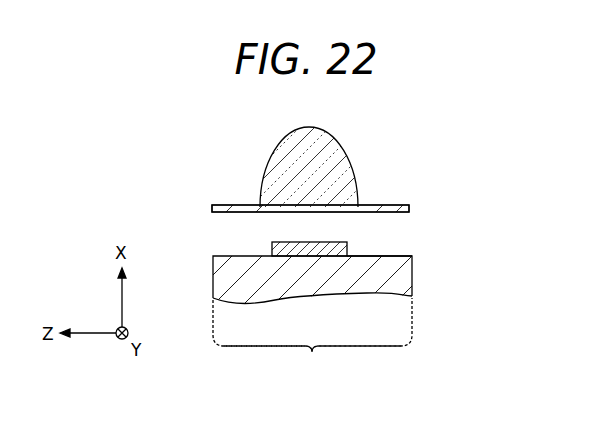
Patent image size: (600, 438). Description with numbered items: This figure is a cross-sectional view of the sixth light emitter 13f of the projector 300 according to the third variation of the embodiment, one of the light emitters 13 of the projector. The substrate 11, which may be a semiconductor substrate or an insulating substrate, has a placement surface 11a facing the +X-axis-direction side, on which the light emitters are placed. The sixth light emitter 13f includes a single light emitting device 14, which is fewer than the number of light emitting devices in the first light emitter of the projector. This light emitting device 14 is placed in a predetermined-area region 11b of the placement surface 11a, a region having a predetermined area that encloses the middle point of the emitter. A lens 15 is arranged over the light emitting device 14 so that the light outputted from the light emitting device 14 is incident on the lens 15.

The projector 300 is at (518, 158).
The lens 15 is at (292, 177).
The sixth light emitter 13f is at (427, 157).
The light emitter 13 is at (310, 208).
The light emitting device 14 is at (275, 247).
The substrate 11 is at (390, 273).
The placement surface 11a is at (363, 251).
The predetermined-area region 11b is at (312, 363).